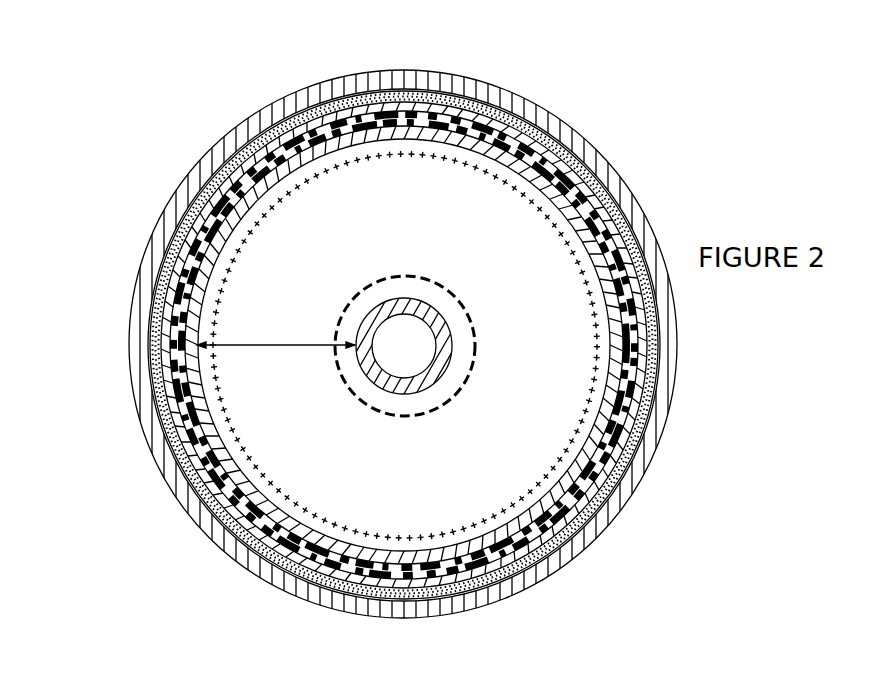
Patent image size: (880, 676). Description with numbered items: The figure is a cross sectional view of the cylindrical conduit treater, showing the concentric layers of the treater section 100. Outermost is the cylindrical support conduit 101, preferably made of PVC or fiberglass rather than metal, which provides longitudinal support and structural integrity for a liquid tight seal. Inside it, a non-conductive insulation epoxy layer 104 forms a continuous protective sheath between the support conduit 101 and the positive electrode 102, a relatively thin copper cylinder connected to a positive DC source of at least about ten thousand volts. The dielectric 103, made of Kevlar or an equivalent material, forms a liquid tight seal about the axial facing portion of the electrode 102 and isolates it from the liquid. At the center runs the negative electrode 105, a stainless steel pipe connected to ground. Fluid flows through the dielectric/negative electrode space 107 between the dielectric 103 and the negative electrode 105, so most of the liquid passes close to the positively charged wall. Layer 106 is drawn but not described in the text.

The treater section 100 is at (618, 117).
The cylindrical support conduit 101 is at (133, 310).
The positive electrode 102 is at (188, 203).
The dielectric 103 is at (298, 112).
The non-conductive insulation epoxy layer 104 is at (162, 262).
The negative electrode 105 is at (420, 308).
The binder layer 106 is at (268, 150).
The dielectric/negative electrode space 107 is at (276, 362).